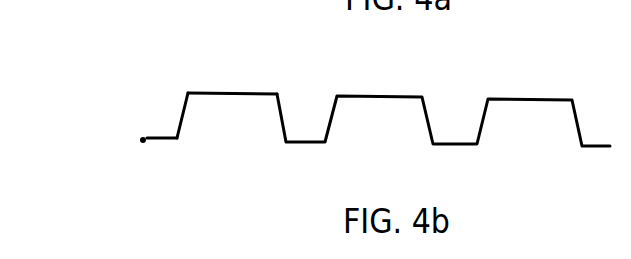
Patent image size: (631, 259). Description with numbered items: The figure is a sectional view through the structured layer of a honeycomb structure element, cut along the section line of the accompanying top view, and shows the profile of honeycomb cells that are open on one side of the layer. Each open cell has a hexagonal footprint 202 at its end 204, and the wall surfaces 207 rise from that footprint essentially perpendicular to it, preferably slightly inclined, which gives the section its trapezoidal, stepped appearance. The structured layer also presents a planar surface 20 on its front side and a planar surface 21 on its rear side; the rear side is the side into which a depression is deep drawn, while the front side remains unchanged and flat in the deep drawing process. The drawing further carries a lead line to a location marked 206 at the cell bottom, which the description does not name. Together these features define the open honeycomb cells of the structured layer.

The hexagonal footprint 202 is at (265, 95).
The end 204 is at (229, 95).
The groove bottom 206 is at (163, 137).
The wall surfaces 207 is at (179, 113).
The planar surface on the rear side 21 is at (594, 145).
The planar surface on the front side 20 is at (594, 148).